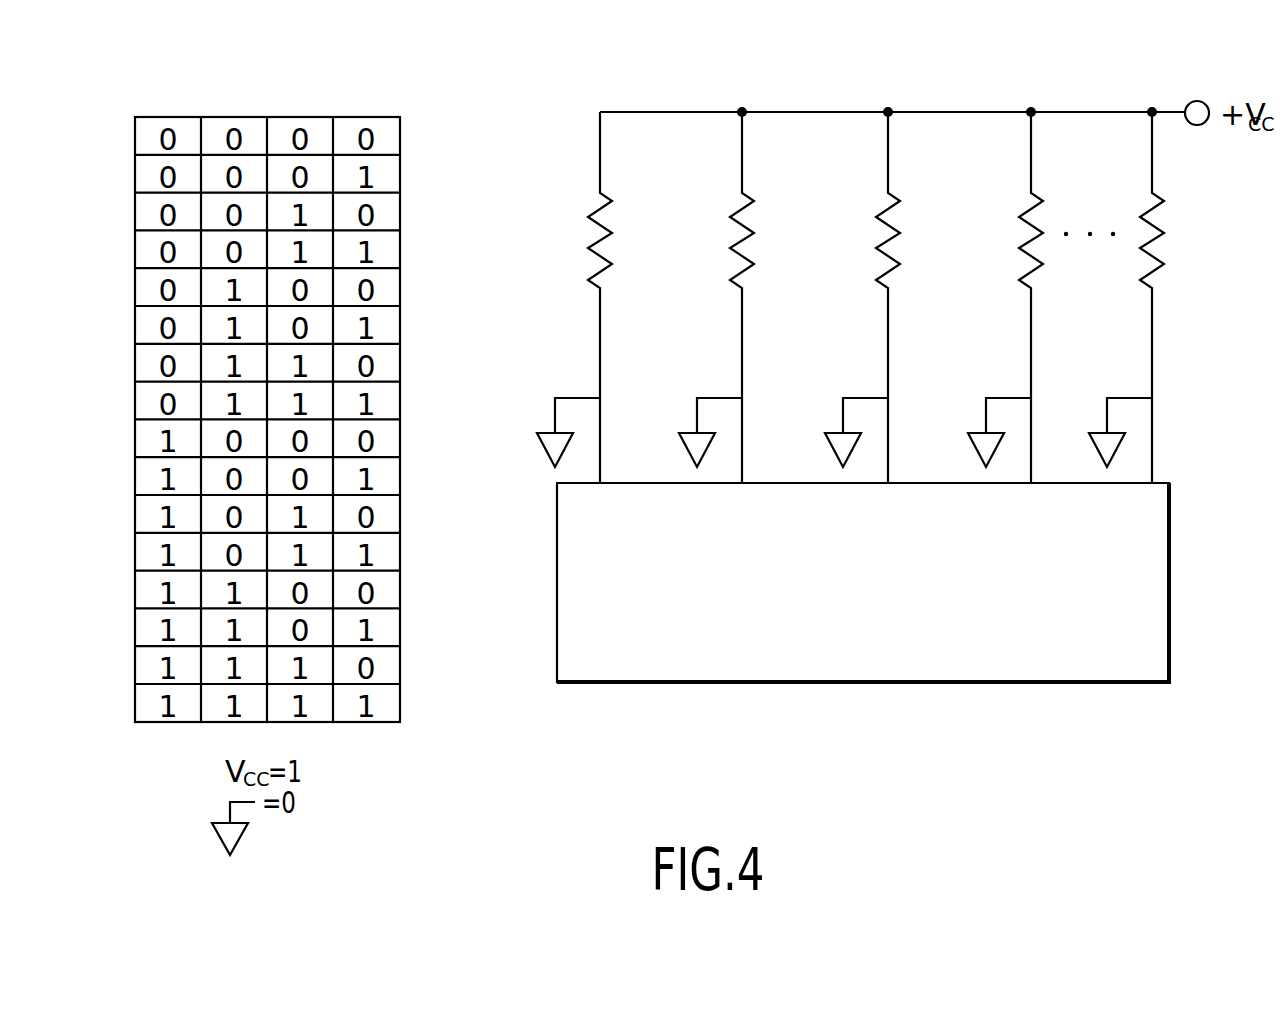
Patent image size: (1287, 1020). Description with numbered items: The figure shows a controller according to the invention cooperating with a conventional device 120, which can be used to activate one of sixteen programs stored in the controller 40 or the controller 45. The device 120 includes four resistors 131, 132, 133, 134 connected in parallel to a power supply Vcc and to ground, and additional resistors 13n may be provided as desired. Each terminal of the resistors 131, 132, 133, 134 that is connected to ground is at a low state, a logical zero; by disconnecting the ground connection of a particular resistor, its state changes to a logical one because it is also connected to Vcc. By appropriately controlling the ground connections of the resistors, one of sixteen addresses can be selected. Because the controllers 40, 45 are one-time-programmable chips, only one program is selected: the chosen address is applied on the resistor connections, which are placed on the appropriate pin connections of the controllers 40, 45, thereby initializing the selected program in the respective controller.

The first pull-up resistor / address line 131 is at (590, 231).
The second pull-up resistor / address line 132 is at (738, 240).
The third pull-up resistor / address line 133 is at (880, 241).
The fourth pull-up resistor / address line 134 is at (1022, 240).
The nth pull-up resistor / address line 13n is at (1165, 232).
The address selection circuit 120 is at (522, 466).
The microcontroller / logic block 40 is at (863, 628).
The microcontroller / logic block 45 is at (1100, 684).